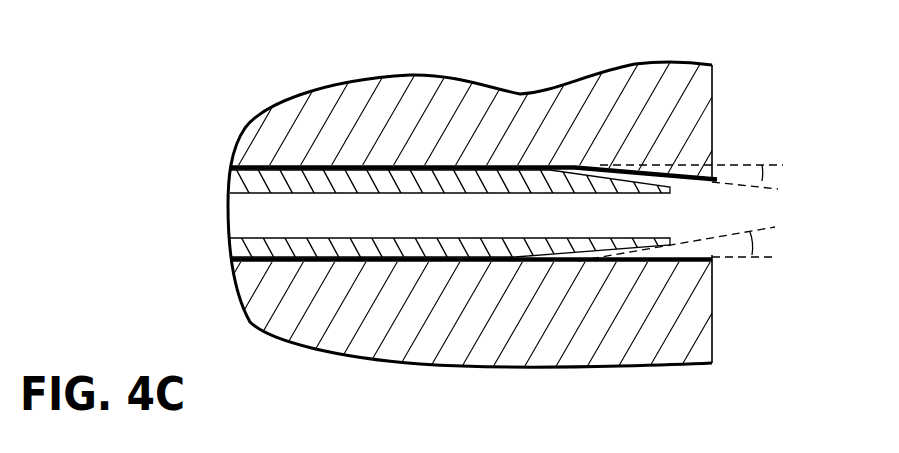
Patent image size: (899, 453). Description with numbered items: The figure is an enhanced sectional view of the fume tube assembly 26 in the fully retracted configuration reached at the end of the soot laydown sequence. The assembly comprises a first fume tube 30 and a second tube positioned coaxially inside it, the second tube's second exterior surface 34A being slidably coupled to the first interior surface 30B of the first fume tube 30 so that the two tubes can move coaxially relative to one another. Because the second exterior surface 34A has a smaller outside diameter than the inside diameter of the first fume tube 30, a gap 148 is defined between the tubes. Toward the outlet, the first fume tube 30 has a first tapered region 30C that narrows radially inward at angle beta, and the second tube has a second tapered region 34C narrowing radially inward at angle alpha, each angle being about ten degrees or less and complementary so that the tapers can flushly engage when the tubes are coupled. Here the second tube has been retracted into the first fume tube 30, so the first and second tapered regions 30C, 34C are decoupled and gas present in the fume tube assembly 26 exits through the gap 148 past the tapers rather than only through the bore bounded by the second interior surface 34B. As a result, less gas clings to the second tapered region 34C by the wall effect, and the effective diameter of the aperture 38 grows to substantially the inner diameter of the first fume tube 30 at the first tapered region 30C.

The fume tube assembly 26 is at (465, 203).
The first fume tube 30 is at (293, 135).
The first interior surface 30B is at (250, 170).
The first tapered region 30C is at (666, 159).
The second exterior surface 34A is at (520, 165).
The second interior surface 34B is at (253, 196).
The second tapered region 34C is at (627, 243).
The aperture 38 is at (744, 213).
The gap 148 is at (377, 166).